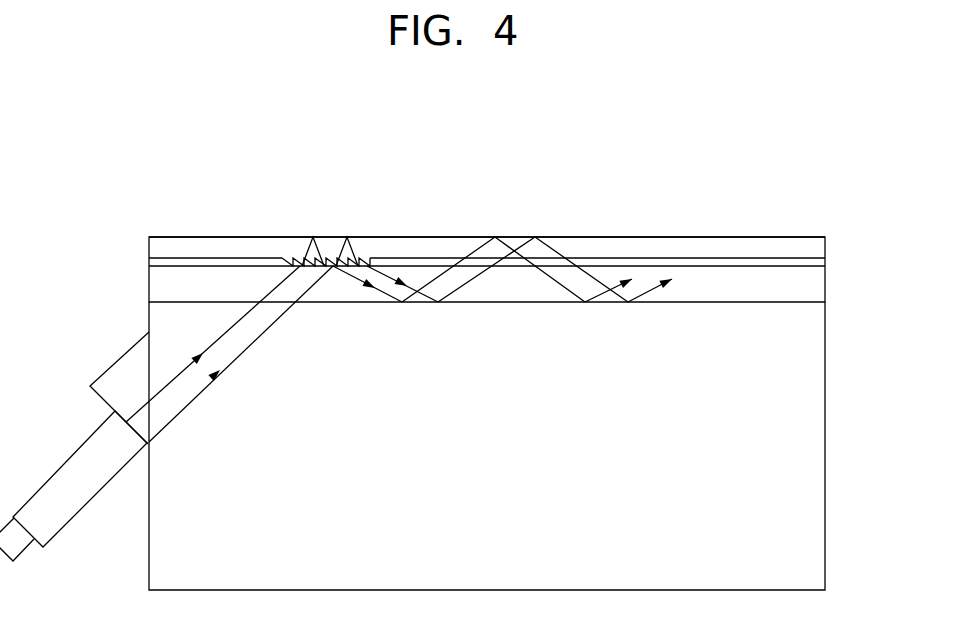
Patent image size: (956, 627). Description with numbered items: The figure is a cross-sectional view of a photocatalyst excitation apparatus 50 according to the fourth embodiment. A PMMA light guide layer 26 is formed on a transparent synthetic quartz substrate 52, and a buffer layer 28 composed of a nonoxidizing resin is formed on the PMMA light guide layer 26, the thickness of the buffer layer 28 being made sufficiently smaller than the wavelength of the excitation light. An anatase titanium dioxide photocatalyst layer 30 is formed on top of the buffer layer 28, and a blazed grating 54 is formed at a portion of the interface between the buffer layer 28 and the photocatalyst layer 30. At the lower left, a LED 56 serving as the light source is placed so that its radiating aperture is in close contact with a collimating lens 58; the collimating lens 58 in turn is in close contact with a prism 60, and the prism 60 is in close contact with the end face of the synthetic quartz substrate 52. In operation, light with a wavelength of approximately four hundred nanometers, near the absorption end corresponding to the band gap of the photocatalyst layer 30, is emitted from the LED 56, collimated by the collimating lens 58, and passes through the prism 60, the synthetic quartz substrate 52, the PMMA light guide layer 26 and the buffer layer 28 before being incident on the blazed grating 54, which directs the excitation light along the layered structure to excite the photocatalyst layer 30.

The photocatalyst excitation apparatus 50 is at (682, 203).
The synthetic quartz substrate 52 is at (813, 422).
The PMMA light guide layer 26 is at (813, 293).
The buffer layer 28 is at (813, 265).
The TiO2 photocatalyst layer 30 is at (812, 250).
The blazed grating 54 is at (293, 260).
The LED 56 is at (23, 555).
The collimating lens 58 is at (78, 461).
The prism 60 is at (122, 380).